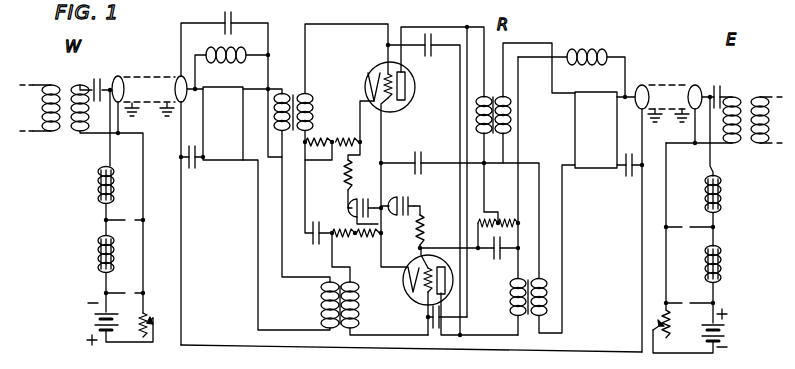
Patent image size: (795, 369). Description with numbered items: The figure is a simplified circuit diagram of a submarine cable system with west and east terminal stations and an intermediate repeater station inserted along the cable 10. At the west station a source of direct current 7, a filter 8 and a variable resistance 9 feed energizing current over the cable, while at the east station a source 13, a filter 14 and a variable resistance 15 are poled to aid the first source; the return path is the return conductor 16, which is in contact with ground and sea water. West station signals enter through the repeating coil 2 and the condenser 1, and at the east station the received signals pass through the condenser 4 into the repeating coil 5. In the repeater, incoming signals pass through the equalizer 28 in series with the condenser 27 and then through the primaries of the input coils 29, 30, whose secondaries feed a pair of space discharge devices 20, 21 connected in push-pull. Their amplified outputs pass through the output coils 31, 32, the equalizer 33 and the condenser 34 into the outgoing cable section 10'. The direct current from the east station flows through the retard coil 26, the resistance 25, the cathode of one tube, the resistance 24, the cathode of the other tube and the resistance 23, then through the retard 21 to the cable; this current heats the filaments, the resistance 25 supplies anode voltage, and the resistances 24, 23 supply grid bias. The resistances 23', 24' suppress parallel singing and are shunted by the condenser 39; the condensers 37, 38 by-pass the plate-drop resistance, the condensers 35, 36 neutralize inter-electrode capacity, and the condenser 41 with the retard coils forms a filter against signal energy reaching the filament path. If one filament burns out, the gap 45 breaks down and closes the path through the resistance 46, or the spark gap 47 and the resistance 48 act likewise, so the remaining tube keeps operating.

The condenser 1 is at (95, 86).
The repeating coil 2 is at (66, 90).
The condenser 4 is at (720, 83).
The repeating coil 5 is at (751, 95).
The source of direct current 7 is at (95, 322).
The filter 8 is at (96, 185).
The variable resistance 9 is at (147, 315).
The cable 10 is at (149, 77).
The cable section 10' is at (668, 84).
The source 13 is at (730, 331).
The filter 14 is at (718, 228).
The variable resistance 15 is at (660, 323).
The return conductor 16 is at (128, 102).
The space discharge device 20 is at (415, 92).
The space discharge device 21 is at (240, 63).
The resistance 23 is at (348, 129).
The resistance 23' is at (323, 120).
The resistance 24 is at (368, 252).
The resistance 24' is at (345, 247).
The resistance 25 is at (510, 219).
The retard coil 26 is at (590, 51).
The condenser 27 is at (191, 172).
The equalizer 28 is at (237, 170).
The input coil 29 is at (300, 90).
The input coil 30 is at (324, 326).
The output coil 31 is at (501, 142).
The output coil 32 is at (521, 322).
The equalizer 33 is at (604, 172).
The condenser 34 is at (628, 178).
The condenser 35 is at (430, 56).
The condenser 36 is at (430, 322).
The condenser 37 is at (423, 161).
The condenser 38 is at (495, 266).
The condenser 39 is at (313, 241).
The condenser 41 is at (231, 28).
The gap 45 is at (350, 209).
The resistance 46 is at (345, 181).
The spark gap 47 is at (415, 205).
The resistance 48 is at (427, 240).